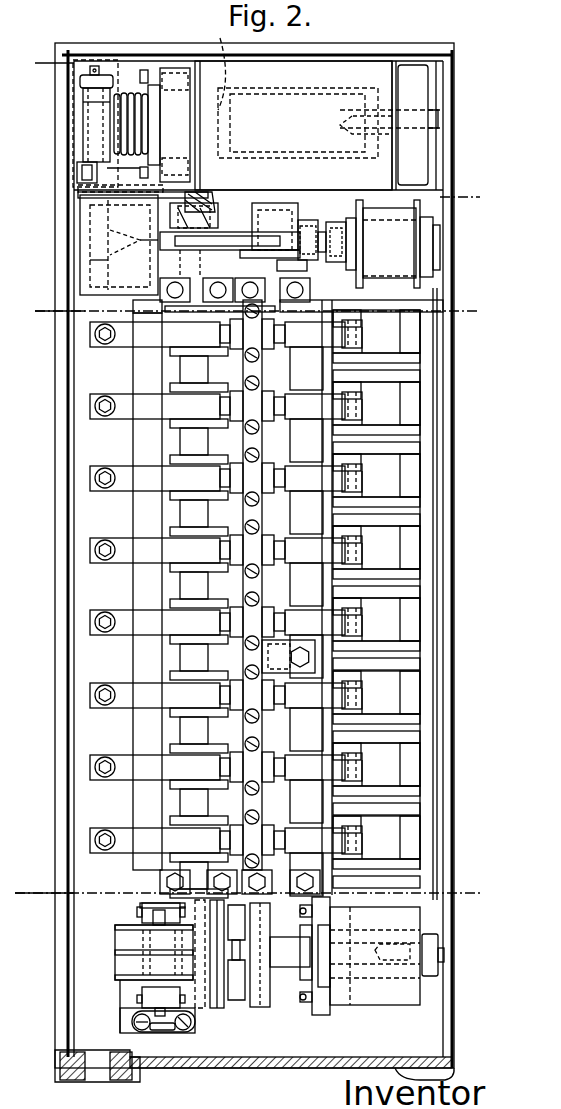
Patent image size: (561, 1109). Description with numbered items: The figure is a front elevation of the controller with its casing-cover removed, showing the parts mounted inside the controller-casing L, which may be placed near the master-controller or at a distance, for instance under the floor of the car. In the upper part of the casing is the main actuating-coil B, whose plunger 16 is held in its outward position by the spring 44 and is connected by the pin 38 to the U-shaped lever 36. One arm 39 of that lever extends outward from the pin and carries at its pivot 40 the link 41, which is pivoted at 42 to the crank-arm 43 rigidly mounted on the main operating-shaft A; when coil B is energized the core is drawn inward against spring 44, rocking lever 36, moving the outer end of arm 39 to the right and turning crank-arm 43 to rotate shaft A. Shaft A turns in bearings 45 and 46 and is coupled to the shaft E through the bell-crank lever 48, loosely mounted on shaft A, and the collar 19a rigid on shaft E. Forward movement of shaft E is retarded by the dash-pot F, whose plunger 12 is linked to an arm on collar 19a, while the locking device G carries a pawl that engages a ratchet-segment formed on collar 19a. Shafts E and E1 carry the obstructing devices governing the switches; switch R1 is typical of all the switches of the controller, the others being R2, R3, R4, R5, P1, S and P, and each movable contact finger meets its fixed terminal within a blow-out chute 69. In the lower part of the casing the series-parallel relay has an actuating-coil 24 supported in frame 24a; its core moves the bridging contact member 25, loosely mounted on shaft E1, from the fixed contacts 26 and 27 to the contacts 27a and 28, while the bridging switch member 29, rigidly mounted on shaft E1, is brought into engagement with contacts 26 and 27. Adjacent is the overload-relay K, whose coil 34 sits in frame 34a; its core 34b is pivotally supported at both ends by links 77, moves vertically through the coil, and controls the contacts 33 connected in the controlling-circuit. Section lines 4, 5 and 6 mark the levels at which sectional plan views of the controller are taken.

The section line 4 is at (256, 131).
The section line 5 is at (254, 312).
The section line 6 is at (244, 894).
The plunger 12 is at (100, 270).
The plunger 16 is at (222, 46).
The collar 19a is at (300, 215).
The actuating-coil 24 is at (385, 992).
The frame 24a is at (436, 968).
The bridging contact member 25 is at (262, 1008).
The fixed contact 26 is at (222, 1010).
The fixed contact 27 is at (236, 952).
The contact 27a is at (303, 1005).
The contact 28 is at (312, 908).
The bridging switch member 29 is at (205, 1010).
The contacts 33 is at (165, 1028).
The actuating-coil 34 is at (125, 945).
The frame 34a is at (138, 912).
The core 34b is at (158, 905).
The U-shaped lever 36 is at (82, 85).
The pin 38 is at (88, 70).
The arm 39 is at (77, 168).
The pivot 40 is at (78, 188).
The link 41 is at (90, 195).
The pivot 42 is at (208, 200).
The crank-arm 43 is at (218, 212).
The spring 44 is at (128, 95).
The bearing 45 is at (235, 290).
The bearing 46 is at (240, 882).
The bell-crank lever 48 is at (233, 255).
The blow-out chute 69 is at (418, 622).
The links 77 is at (168, 908).
The main actuating-coil B is at (308, 70).
The dash-pot F is at (120, 222).
The locking device G is at (393, 244).
The controller-casing L is at (456, 594).
The overload-relay K is at (70, 985).
The main operating-shaft A is at (198, 438).
The shaft E is at (276, 518).
The shaft E1 is at (282, 745).
The switch R1 is at (128, 340).
The bar R2 is at (142, 410).
The bar R3 is at (135, 480).
The bar R4 is at (135, 553).
The bar R5 is at (135, 626).
The bar P' P1 is at (135, 700).
The bar S is at (135, 772).
The bar P is at (135, 845).